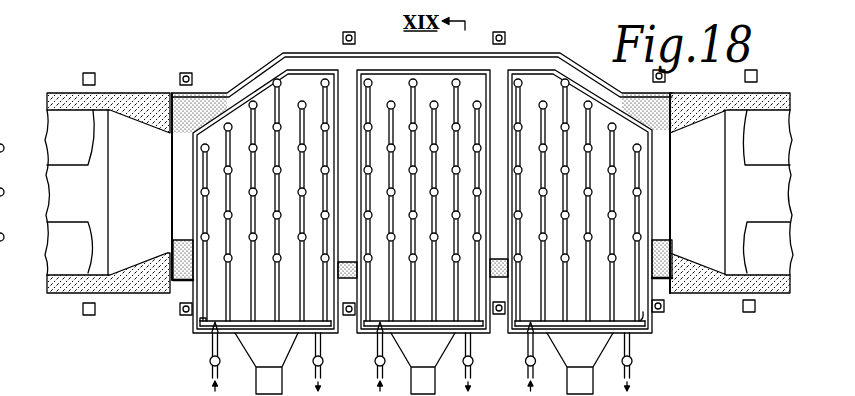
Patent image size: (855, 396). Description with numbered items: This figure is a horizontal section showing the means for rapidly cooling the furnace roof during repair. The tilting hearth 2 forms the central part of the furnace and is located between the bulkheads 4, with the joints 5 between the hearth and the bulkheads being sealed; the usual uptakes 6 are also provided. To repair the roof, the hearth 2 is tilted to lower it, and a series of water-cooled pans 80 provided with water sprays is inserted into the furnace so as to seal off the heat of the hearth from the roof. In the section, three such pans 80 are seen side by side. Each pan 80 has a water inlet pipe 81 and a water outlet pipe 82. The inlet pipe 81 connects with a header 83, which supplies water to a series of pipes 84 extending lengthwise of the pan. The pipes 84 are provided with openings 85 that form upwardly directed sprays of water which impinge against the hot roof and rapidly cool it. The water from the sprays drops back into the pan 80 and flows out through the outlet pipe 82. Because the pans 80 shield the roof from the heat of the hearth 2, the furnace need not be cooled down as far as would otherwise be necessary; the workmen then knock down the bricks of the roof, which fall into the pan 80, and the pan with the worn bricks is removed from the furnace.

The tilting hearth 2 is at (288, 62).
The bulkheads 4 is at (144, 257).
The joints 5 is at (672, 226).
The uptakes 6 is at (90, 130).
The water-cooled pan 80 is at (196, 334).
The water inlet pipe 81 is at (211, 372).
The water outlet pipe 82 is at (321, 367).
The header 83 is at (208, 324).
The pipes 84 is at (203, 162).
The openings 85 is at (203, 193).